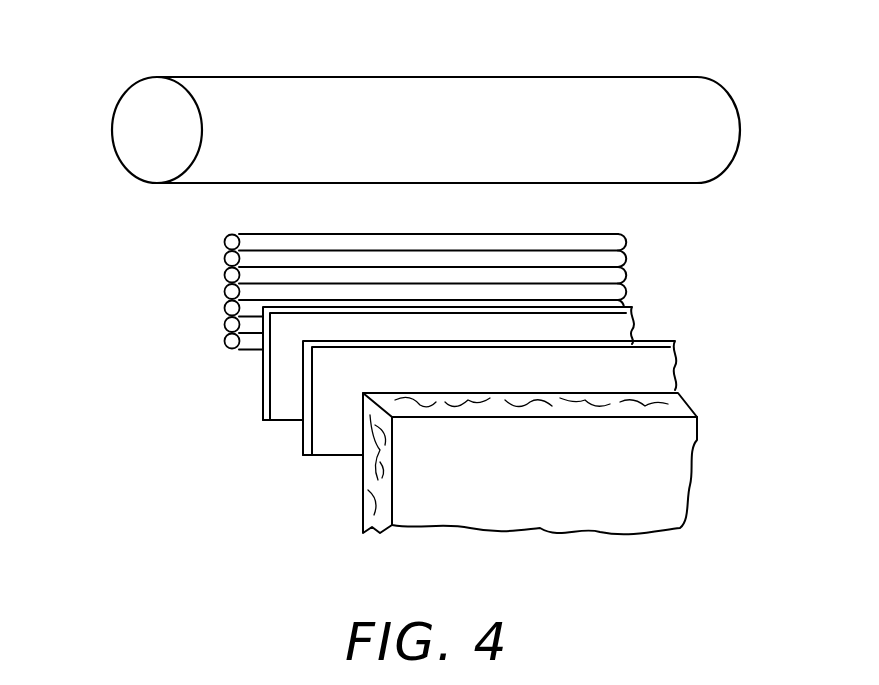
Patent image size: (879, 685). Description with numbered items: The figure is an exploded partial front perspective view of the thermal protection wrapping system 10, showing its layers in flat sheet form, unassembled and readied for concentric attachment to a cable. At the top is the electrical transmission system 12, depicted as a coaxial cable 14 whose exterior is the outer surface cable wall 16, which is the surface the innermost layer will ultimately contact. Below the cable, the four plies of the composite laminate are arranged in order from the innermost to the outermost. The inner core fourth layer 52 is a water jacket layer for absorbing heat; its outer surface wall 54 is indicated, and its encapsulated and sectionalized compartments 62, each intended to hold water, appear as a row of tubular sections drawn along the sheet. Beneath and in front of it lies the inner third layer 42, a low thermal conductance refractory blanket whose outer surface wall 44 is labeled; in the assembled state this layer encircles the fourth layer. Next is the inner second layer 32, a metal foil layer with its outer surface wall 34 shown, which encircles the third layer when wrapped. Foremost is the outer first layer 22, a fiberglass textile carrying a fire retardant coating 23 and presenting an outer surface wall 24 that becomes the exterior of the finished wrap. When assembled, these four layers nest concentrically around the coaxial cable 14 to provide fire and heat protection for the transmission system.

The thermal protection wrapping system 10 is at (58, 118).
The electrical transmission system 12 is at (742, 92).
The coaxial cable 14 is at (163, 113).
The outer surface cable wall 16 is at (447, 98).
The outer first layer 22 is at (615, 447).
The fire retardant coating 23 is at (375, 468).
The outer surface wall 24 is at (475, 481).
The inner second layer 32 is at (633, 370).
The outer surface wall 34 is at (475, 389).
The inner third layer 42 is at (608, 327).
The outer surface wall 44 is at (412, 339).
The inner core fourth layer 52 is at (612, 279).
The outer surface wall 54 is at (363, 260).
The encapsulated and sectionalized compartments 62 is at (226, 243).